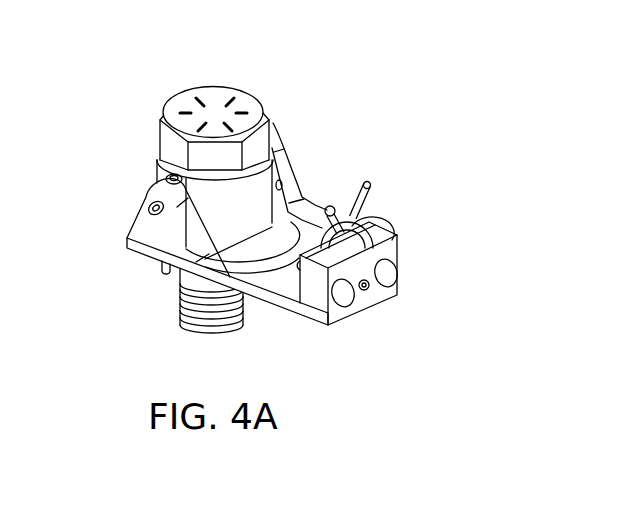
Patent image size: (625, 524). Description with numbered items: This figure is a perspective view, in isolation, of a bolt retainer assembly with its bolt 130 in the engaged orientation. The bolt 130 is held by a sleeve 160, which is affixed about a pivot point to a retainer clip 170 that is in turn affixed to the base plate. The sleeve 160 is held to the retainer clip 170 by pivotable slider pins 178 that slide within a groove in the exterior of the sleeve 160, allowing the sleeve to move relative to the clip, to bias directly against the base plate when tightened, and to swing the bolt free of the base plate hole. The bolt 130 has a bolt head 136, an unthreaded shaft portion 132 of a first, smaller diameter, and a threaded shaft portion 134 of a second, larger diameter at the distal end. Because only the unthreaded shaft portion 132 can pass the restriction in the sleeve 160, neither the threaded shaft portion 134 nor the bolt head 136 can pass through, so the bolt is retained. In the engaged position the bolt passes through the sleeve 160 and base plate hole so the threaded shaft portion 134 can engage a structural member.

The bolt 130 is at (202, 134).
The unthreaded shaft portion 132 is at (193, 282).
The threaded shaft portion 134 is at (168, 328).
The bolt head 136 is at (147, 112).
The sleeve 160 is at (271, 187).
The retainer clip 170 is at (202, 248).
The slider pins 178 is at (138, 214).